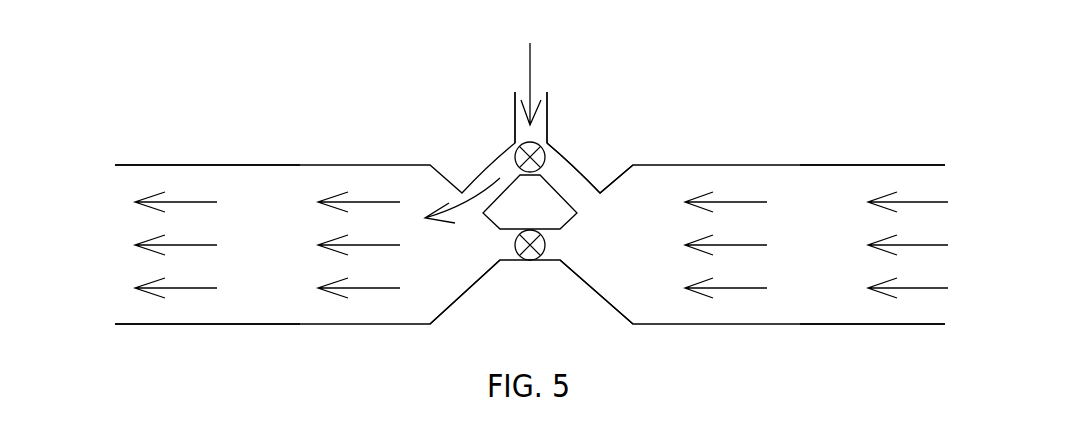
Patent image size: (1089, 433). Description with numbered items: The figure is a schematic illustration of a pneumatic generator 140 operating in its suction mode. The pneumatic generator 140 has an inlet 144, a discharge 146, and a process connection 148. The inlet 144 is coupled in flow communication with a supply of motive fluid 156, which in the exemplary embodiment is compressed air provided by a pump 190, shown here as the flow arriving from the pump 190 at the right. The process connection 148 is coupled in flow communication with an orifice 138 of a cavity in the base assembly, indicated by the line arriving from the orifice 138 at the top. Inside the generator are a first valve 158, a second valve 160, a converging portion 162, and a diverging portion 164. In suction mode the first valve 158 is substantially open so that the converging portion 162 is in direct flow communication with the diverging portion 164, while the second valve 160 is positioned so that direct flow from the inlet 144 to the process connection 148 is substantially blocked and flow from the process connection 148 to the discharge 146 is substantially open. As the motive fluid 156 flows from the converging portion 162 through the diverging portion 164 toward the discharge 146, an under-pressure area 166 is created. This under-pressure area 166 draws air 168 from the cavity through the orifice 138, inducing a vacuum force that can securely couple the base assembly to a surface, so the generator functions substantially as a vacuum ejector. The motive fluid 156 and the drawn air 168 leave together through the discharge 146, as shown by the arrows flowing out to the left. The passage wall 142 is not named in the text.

The orifice 138 is at (574, 79).
The pneumatic generator 140 is at (900, 132).
The passage wall 142 is at (608, 185).
The inlet 144 is at (950, 185).
The discharge 146 is at (160, 132).
The process connection 148 is at (547, 108).
The motive fluid 156 is at (732, 202).
The first valve 158 is at (530, 260).
The second valve 160 is at (517, 145).
The converging portion 162 is at (610, 305).
The diverging portion 164 is at (438, 316).
The under-pressure area 166 is at (506, 255).
The air 168 is at (530, 67).
The pump 190 is at (959, 245).